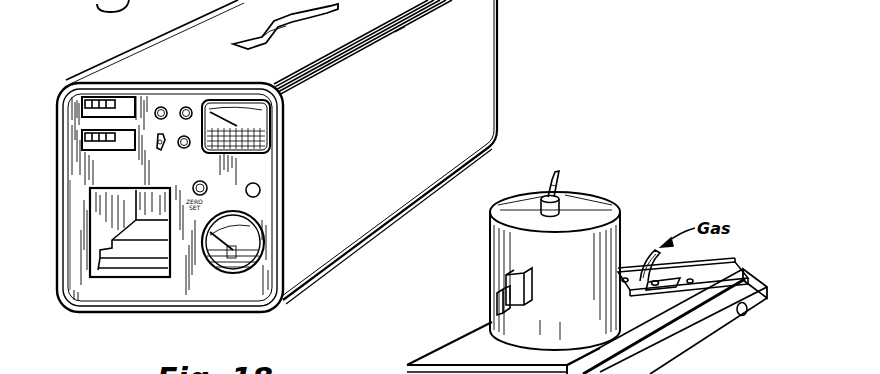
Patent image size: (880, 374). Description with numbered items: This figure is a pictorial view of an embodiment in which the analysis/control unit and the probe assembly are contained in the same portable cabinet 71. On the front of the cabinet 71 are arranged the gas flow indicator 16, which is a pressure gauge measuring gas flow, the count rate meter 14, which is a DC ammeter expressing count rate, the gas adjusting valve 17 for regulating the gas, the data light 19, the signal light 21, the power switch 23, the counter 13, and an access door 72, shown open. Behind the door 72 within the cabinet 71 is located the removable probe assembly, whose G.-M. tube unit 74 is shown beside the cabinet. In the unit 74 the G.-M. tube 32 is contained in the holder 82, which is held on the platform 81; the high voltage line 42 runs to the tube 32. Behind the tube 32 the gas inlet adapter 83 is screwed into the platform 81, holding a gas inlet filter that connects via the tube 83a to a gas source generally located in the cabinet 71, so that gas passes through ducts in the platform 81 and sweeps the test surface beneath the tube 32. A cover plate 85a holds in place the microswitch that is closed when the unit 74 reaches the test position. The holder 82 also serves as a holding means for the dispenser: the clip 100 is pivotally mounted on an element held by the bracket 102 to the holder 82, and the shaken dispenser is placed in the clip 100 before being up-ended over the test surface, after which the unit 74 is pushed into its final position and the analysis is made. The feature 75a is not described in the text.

The counter 13 is at (83, 143).
The count rate meter 14 is at (263, 136).
The gas flow indicator 16 is at (246, 251).
The gas adjusting valve 17 is at (261, 190).
The data light 19 is at (187, 107).
The signal light 21 is at (178, 138).
The power switch 23 is at (156, 142).
The portable cabinet 71 is at (443, 164).
The access door 72 is at (98, 264).
The G.-M. tube 32 is at (542, 196).
The high voltage line 42 is at (560, 178).
The holder 82 is at (495, 210).
The clip 100 is at (500, 303).
The bracket 102 is at (503, 281).
The tube 83a is at (643, 248).
The gas inlet adapter 83 is at (660, 269).
The platform 81 is at (733, 270).
The cover plate 85a is at (657, 287).
The G.-M. tube unit 74 is at (686, 349).
The support 75a is at (342, 366).